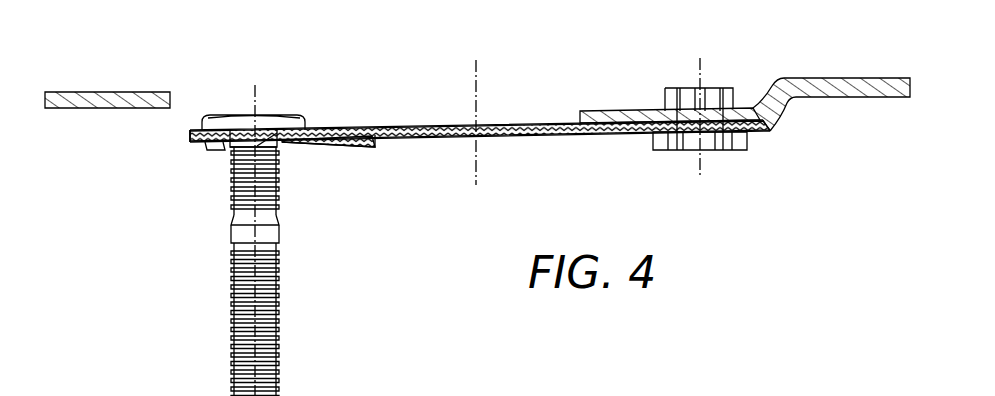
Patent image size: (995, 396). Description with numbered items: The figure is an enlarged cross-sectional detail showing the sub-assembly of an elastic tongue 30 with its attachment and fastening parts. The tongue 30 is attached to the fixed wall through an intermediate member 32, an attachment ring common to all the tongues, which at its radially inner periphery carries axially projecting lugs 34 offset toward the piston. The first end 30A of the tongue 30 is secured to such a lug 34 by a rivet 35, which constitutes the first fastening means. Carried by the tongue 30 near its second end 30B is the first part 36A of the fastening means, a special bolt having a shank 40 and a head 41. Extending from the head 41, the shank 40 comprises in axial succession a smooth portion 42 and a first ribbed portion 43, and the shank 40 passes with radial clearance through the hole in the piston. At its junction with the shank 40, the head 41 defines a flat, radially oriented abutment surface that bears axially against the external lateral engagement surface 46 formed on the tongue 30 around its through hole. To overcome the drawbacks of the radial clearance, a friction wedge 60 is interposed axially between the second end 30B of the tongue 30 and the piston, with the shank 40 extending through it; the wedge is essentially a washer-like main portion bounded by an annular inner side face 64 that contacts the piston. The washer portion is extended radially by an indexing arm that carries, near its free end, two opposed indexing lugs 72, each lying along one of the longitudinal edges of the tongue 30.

The tongue 30 is at (436, 120).
The first end of tongue 30A is at (778, 138).
The second end of tongue 30B is at (182, 133).
The intermediate member 32 is at (86, 84).
The lug 34 is at (614, 108).
The rivet 35 is at (648, 154).
The first part 36A is at (222, 316).
The shank 40 is at (290, 232).
The head 41 is at (266, 117).
The smooth portion 42 is at (282, 124).
The first ribbed portion 43 is at (259, 163).
The external lateral engagement surface 46 is at (224, 114).
The friction wedge 60 is at (218, 156).
The annular inner side face 64 is at (205, 150).
The indexing lug 72 is at (371, 132).